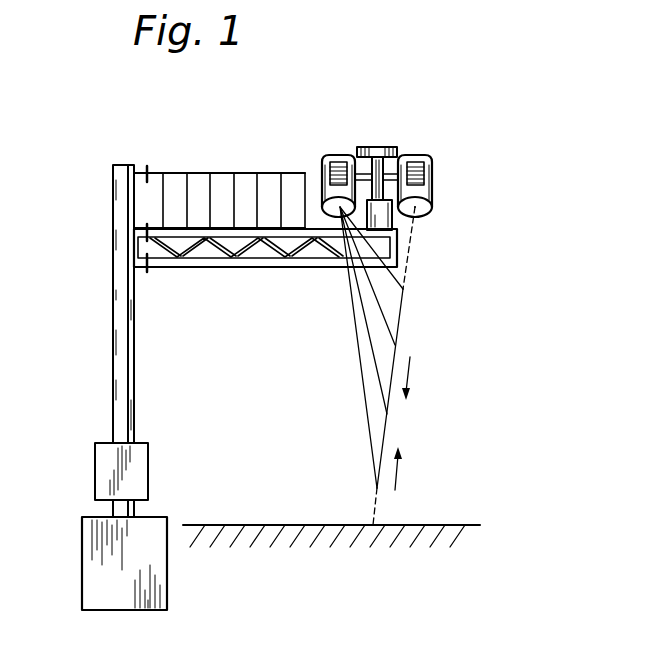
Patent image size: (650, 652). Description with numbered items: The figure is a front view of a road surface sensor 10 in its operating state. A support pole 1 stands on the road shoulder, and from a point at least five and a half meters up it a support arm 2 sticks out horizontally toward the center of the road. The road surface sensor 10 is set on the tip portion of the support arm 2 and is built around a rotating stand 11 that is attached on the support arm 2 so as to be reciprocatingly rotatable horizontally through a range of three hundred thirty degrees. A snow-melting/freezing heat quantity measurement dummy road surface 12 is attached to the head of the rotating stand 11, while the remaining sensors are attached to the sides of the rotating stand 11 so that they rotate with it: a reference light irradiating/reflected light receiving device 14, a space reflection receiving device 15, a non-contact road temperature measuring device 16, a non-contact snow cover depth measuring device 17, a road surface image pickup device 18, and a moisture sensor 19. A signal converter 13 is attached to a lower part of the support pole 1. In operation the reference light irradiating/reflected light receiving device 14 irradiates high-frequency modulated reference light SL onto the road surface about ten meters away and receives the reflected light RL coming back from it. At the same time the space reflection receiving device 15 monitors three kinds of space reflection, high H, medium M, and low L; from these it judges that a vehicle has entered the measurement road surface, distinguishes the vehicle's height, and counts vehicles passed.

The support pole 1 is at (117, 302).
The support arm 2 is at (228, 268).
The road surface sensor 10 is at (428, 125).
The rotating stand 11 is at (395, 217).
The snow-melting/freezing heat quantity measurement dummy road surface 12 is at (373, 147).
The signal converter 13 is at (108, 452).
The reference light irradiating/reflected light receiving device 14 is at (491, 183).
The space reflection receiving device 15 is at (309, 156).
The non-contact road temperature measuring device 16 is at (491, 183).
The non-contact snow cover depth measuring device 17 is at (491, 183).
The road surface image pickup device 18 is at (335, 151).
The moisture sensor 19 is at (425, 187).
The space reflection high H is at (380, 298).
The space reflection medium M is at (375, 350).
The space reflection low L is at (372, 423).
The reference light SL is at (410, 372).
The reflected light RL is at (397, 470).